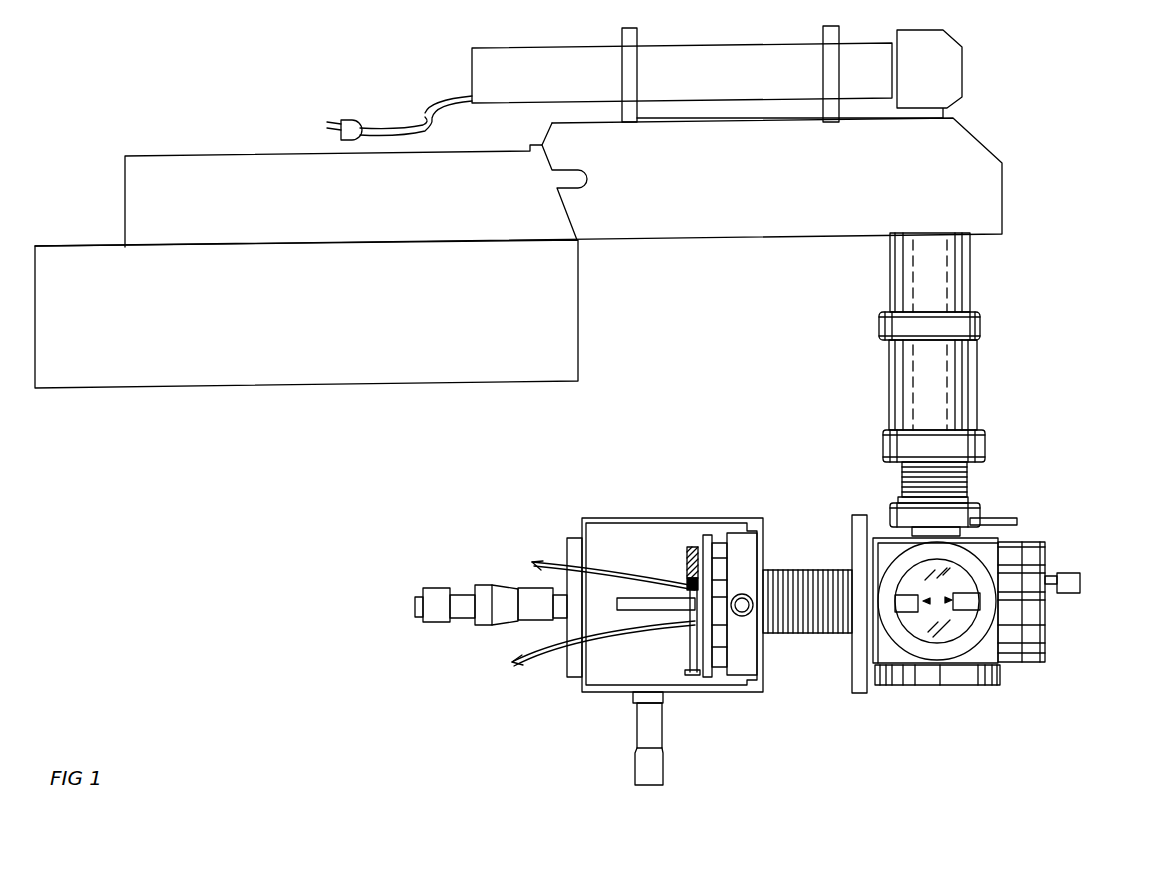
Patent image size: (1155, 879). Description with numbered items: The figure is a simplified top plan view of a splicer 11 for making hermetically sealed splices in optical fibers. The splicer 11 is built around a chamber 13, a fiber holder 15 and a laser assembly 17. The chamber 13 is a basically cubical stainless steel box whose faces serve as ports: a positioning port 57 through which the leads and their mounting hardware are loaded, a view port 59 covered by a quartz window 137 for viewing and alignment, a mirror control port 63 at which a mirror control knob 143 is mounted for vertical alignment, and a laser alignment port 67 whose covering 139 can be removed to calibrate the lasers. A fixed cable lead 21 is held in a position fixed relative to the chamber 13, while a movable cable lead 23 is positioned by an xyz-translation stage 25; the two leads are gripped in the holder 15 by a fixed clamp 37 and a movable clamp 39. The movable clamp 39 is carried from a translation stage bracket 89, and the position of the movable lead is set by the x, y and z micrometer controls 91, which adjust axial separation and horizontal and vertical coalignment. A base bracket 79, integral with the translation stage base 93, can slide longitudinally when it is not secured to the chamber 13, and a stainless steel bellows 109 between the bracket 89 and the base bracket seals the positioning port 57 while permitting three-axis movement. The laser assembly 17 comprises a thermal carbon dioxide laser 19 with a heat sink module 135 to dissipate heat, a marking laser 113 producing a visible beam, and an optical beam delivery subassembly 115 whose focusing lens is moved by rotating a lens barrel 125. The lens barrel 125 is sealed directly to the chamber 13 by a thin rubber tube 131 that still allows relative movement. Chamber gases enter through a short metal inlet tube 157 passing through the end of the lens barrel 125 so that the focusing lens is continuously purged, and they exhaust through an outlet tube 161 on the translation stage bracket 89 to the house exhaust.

The splicer 11 is at (230, 622).
The chamber 13 is at (1017, 673).
The fiber holder 15 is at (548, 716).
The laser assembly 17 is at (295, 125).
The thermal laser 19 is at (340, 205).
The fixed cable lead 21 is at (512, 660).
The movable cable lead 23 is at (532, 562).
The xyz-translation stage 25 is at (683, 682).
The fixed clamp 37 is at (967, 607).
The movable clamp 39 is at (907, 600).
The positioning port 57 is at (852, 660).
The view port 59 is at (948, 653).
The mirror control port 63 is at (1045, 627).
The laser alignment port 67 is at (888, 530).
The base bracket 79 is at (855, 527).
The translation stage bracket 89 is at (743, 543).
The micrometer controls 91 is at (433, 588).
The translation stage base 93 is at (612, 682).
The bellows 109 is at (807, 622).
The marking laser 113 is at (733, 85).
The optical beam delivery subassembly 115 is at (977, 110).
The lens barrel 125 is at (977, 387).
The rubber tube 131 is at (1013, 532).
The heat sink module 135 is at (297, 324).
The quartz window 137 is at (975, 620).
The covering 139 is at (990, 687).
The mirror control knob 143 is at (1080, 583).
The inlet tube 157 is at (992, 517).
The outlet tube 161 is at (645, 605).